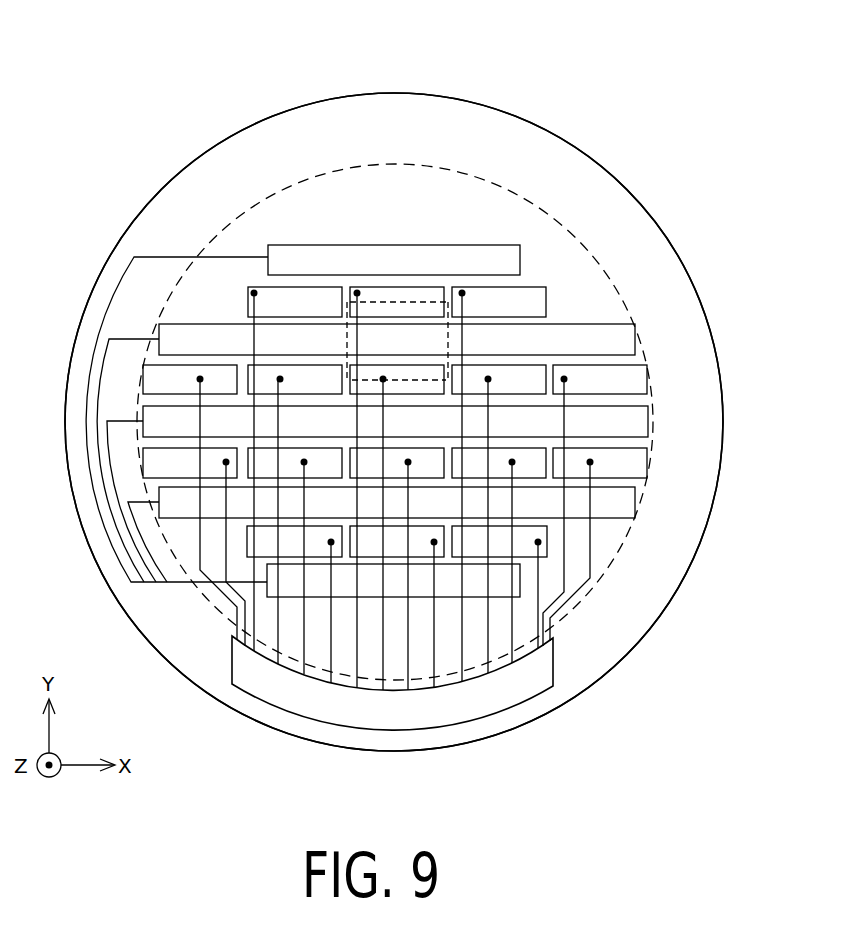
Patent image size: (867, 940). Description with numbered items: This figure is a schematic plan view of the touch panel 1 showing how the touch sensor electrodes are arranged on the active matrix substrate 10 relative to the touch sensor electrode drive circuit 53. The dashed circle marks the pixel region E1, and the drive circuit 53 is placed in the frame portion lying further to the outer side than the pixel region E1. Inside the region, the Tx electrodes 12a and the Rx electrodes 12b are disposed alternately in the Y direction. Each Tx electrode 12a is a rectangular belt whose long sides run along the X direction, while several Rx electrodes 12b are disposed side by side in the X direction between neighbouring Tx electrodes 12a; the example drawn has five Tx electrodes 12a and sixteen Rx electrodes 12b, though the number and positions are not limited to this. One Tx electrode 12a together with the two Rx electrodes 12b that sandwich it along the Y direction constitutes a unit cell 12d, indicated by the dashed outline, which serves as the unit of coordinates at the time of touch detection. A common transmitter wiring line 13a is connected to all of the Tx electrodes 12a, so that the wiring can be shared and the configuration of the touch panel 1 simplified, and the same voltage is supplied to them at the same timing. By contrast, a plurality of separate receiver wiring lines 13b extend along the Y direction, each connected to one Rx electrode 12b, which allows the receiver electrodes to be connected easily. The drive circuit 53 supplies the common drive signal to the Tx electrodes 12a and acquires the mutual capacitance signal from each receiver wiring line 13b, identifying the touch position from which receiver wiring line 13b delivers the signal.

The touch panel 1 is at (607, 134).
The active matrix substrate 10 is at (431, 92).
The pixel region E1 is at (345, 161).
The Tx electrode 12a is at (310, 243).
The Rx electrode 12b is at (531, 283).
The unit cell 12d is at (431, 294).
The transmitter wiring line 13a is at (151, 613).
The receiver wiring line 13b is at (216, 599).
The touch sensor electrode drive circuit 53 is at (533, 678).